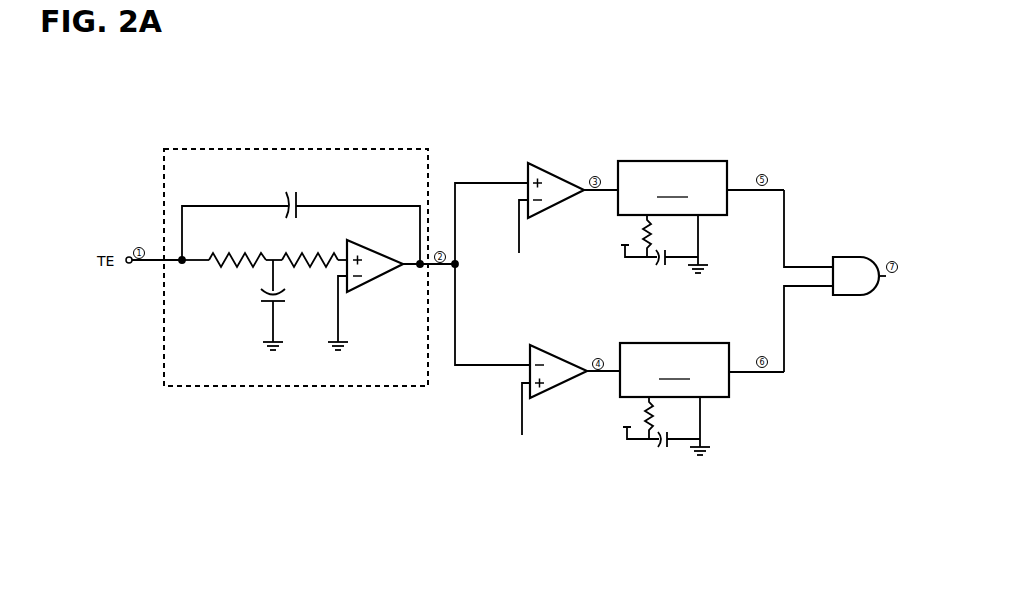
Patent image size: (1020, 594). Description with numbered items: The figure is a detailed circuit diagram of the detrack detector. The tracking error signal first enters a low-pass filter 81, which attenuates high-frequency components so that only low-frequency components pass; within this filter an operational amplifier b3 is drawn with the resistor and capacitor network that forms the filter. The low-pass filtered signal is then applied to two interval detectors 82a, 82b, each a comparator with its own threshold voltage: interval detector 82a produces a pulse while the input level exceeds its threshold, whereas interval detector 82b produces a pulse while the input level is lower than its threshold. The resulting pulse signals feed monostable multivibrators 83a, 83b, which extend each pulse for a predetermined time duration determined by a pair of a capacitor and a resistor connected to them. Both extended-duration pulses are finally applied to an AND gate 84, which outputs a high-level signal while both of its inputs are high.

The low-pass filter 81 is at (350, 147).
The operational amplifier b3 is at (372, 281).
The interval detector 82a is at (546, 172).
The interval detector 82b is at (543, 348).
The monostable multivibrator 83a is at (674, 159).
The monostable multivibrator 83b is at (675, 341).
The AND gate 84 is at (845, 297).